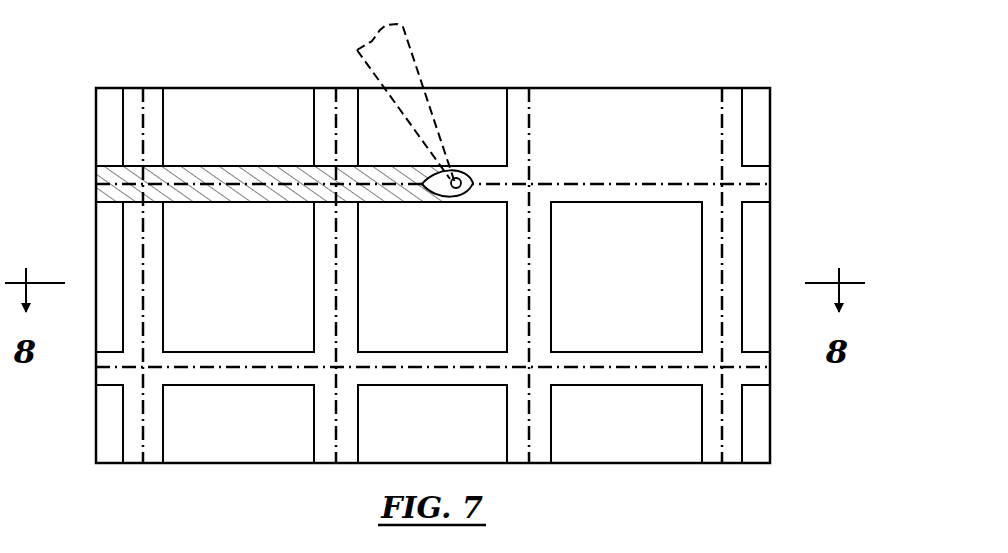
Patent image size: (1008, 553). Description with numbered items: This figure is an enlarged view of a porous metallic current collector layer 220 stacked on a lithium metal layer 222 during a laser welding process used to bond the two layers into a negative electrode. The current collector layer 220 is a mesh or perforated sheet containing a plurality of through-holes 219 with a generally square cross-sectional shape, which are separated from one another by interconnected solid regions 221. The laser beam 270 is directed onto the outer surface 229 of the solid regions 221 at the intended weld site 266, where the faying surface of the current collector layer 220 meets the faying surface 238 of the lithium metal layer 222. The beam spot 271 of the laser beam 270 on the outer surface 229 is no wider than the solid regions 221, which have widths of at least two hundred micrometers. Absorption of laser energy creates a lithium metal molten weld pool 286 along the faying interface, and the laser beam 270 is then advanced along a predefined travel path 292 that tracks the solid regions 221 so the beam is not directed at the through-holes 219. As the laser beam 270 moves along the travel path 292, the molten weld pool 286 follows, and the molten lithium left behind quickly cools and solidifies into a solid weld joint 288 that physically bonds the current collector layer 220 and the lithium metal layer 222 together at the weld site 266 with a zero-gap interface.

The through-holes 219 is at (185, 275).
The current collector layer 220 is at (742, 430).
The interconnected solid regions 221 is at (122, 128).
The lithium metal layer 222 is at (770, 128).
The outer surface 229 is at (640, 358).
The faying surface 238 is at (454, 439).
The weld site 266 is at (219, 202).
The laser beam 270 is at (420, 68).
The beam spot 271 is at (459, 200).
The molten weld pool 286 is at (427, 202).
The solid weld joint 288 is at (251, 167).
The travel path 292 is at (616, 181).